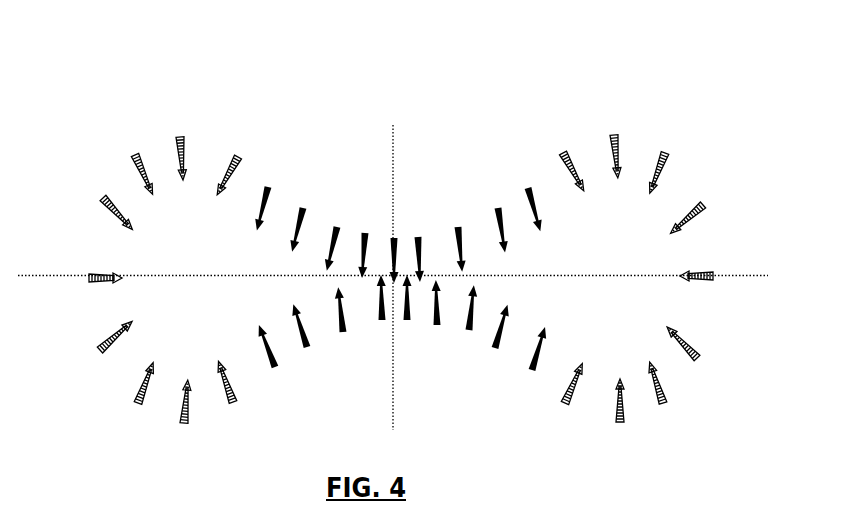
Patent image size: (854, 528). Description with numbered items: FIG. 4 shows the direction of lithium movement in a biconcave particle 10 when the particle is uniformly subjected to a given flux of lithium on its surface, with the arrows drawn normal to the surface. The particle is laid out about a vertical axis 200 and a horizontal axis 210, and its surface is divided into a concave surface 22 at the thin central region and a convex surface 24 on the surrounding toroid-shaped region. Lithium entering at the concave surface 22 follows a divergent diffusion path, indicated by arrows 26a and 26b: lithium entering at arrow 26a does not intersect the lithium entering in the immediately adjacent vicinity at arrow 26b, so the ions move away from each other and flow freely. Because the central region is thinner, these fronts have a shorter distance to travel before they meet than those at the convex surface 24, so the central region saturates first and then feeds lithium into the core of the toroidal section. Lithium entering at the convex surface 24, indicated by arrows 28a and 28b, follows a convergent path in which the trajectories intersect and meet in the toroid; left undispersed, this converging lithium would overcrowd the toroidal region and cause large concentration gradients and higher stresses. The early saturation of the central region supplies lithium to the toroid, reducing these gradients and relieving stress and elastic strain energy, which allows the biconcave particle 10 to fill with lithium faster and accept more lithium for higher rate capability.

The biconcave particle 10 is at (94, 103).
The concave surface 22 is at (498, 208).
The convex surface 24 is at (612, 136).
The arrow of divergent diffusion 26a is at (337, 227).
The arrow of divergent diffusion 26b is at (268, 187).
The arrow of convergent diffusion 28a is at (664, 157).
The arrow of convergent diffusion 28b is at (703, 204).
The vertical axis 200 is at (376, 277).
The horizontal axis 210 is at (393, 283).